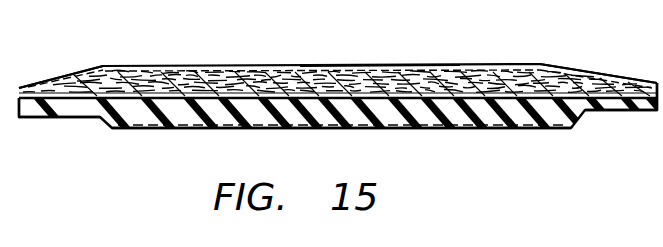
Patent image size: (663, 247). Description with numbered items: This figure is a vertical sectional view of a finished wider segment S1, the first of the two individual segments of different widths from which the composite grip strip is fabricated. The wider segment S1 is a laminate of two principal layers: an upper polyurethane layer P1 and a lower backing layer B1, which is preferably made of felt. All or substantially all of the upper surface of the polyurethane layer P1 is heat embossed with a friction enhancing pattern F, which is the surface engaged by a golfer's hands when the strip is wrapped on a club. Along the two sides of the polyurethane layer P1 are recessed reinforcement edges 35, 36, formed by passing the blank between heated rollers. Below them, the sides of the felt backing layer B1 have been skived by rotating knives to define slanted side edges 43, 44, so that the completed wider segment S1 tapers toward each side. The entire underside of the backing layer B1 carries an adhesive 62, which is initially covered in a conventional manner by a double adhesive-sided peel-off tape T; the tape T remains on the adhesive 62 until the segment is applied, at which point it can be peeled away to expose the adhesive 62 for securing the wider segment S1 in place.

The wider segment S1 is at (341, 94).
The backing layer B1 is at (271, 83).
The peel-off tape T is at (386, 82).
The adhesive 62 is at (466, 74).
The slanted side edge 43 is at (53, 92).
The slanted side edge 44 is at (600, 84).
The recessed reinforcement edge 35 is at (54, 118).
The recessed reinforcement edge 36 is at (617, 112).
The polyurethane layer P1 is at (147, 113).
The friction enhancing pattern F is at (466, 129).